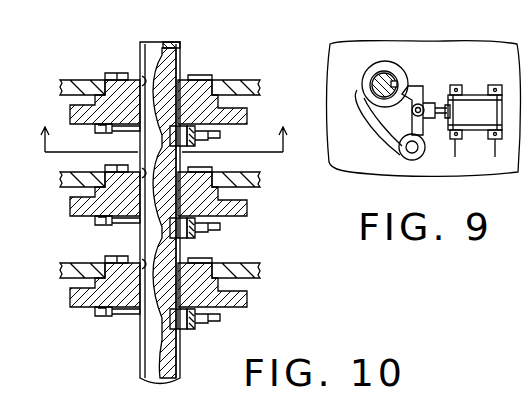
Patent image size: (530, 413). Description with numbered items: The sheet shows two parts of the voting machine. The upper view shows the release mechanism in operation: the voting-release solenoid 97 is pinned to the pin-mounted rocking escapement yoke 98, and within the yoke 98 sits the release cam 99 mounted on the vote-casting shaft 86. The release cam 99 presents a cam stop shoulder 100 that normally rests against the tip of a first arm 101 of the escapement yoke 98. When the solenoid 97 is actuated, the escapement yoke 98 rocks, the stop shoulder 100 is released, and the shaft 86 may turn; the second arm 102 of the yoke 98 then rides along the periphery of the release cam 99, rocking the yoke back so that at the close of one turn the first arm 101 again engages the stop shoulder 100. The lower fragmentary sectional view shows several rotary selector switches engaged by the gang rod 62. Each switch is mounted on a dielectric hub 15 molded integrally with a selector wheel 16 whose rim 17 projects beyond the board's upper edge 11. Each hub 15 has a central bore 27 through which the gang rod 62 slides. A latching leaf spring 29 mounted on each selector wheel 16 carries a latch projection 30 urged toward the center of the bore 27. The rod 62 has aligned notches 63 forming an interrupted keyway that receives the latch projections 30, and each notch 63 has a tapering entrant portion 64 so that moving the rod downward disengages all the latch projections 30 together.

In FIG. 10, the upper edge 11 is at (288, 120).
In FIG. 10, the hub 15 is at (103, 80).
In FIG. 10, the selector wheel 16 is at (86, 314).
In FIG. 10, the rim 17 is at (71, 306).
In FIG. 10, the central bore 27 is at (138, 72).
In FIG. 10, the latching leaf spring 29 is at (215, 142).
In FIG. 10, the latch projection 30 is at (176, 148).
In FIG. 10, the gang rod 62 is at (141, 372).
In FIG. 10, the notches 63 is at (170, 132).
In FIG. 10, the tapering entrant portion 64 is at (178, 78).
In FIG. 9, the vote-casting shaft 86 is at (384, 75).
In FIG. 9, the voting-release solenoid 97 is at (462, 121).
In FIG. 9, the escapement yoke 98 is at (376, 130).
In FIG. 9, the release cam 99 is at (376, 66).
In FIG. 9, the cam stop shoulder 100 is at (417, 86).
In FIG. 9, the first arm 101 is at (423, 102).
In FIG. 9, the second arm 102 is at (331, 68).